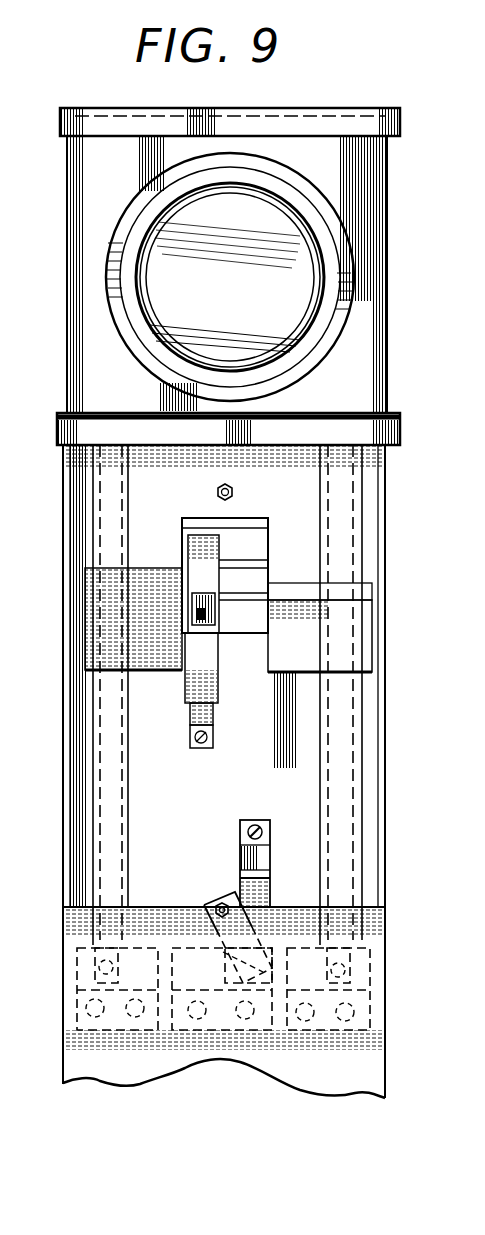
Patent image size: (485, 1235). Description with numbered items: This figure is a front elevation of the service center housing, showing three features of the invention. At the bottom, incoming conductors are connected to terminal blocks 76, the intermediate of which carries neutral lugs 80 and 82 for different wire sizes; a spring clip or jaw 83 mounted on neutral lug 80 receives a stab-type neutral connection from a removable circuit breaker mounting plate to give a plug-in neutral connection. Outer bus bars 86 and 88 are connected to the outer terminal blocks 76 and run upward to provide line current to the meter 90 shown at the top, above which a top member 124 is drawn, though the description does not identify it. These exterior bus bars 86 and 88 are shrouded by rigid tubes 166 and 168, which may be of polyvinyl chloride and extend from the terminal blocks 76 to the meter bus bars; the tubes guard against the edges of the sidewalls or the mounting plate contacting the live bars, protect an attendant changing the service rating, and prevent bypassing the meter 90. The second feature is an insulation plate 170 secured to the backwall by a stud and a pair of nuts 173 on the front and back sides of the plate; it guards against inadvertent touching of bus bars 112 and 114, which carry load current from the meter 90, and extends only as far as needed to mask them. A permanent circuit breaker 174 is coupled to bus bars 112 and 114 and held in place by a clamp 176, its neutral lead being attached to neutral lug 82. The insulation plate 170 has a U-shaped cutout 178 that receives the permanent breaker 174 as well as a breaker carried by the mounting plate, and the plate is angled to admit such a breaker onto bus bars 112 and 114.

The top plate 124 is at (273, 123).
The meter 90 is at (262, 213).
The nuts 173 is at (236, 491).
The bus bar 114 is at (262, 545).
The bus bar 112 is at (240, 612).
The insulation plate 170 is at (345, 581).
The U-shaped cutout 178 is at (263, 650).
The permanent circuit breaker 174 is at (215, 660).
The clamp 176 is at (216, 740).
The outer bus bar 86 is at (115, 806).
The rigid tube 166 is at (128, 828).
The outer bus bar 88 is at (340, 822).
The rigid tube 168 is at (325, 855).
The neutral lug 80 is at (250, 820).
The spring clip or jaw 83 is at (240, 860).
The neutral lug 82 is at (232, 890).
The terminal blocks 76 is at (147, 960).